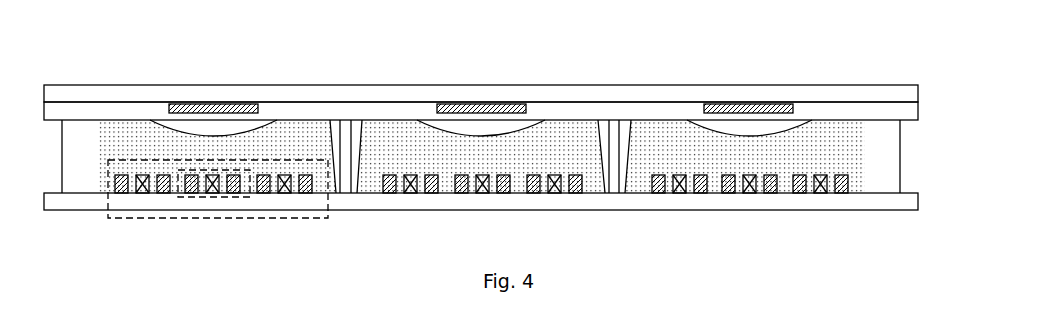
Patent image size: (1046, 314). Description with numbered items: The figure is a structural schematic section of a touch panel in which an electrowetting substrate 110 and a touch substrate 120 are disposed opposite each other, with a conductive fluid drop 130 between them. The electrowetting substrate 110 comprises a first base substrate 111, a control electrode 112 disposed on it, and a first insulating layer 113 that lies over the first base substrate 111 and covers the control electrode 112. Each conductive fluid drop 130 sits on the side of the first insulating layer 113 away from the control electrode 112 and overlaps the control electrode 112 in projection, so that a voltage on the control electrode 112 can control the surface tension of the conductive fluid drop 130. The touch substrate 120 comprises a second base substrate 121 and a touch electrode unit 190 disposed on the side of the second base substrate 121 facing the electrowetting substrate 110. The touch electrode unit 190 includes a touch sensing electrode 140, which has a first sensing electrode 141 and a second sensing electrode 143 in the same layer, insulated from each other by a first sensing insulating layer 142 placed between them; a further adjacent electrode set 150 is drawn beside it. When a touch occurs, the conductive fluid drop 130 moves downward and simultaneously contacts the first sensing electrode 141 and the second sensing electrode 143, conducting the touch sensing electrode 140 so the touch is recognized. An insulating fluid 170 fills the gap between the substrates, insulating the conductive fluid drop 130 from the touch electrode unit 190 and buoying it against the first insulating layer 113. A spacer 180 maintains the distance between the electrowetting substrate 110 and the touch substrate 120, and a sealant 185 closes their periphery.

The electrowetting substrate 110 is at (504, 82).
The first base substrate 111 is at (79, 97).
The control electrode 112 is at (452, 107).
The first insulating layer 113 is at (825, 113).
The touch substrate 120 is at (504, 208).
The second base substrate 121 is at (79, 200).
The conductive fluid drop 130 is at (240, 125).
The touch sensing electrode 140 is at (224, 193).
The first sensing electrode 141 is at (480, 193).
The first sensing insulating layer 142 is at (473, 193).
The second sensing electrode 143 is at (497, 193).
The adjacent electrode unit 150 is at (290, 193).
The insulating fluid 170 is at (381, 130).
The spacer 180 is at (612, 137).
The sealant 185 is at (883, 163).
The touch electrode unit 190 is at (233, 208).